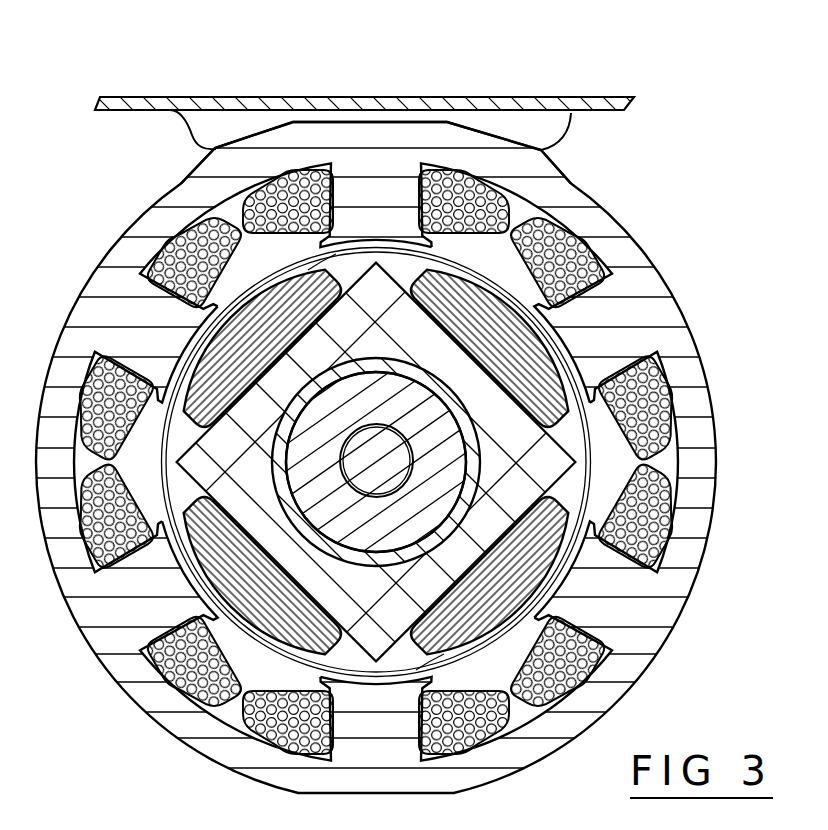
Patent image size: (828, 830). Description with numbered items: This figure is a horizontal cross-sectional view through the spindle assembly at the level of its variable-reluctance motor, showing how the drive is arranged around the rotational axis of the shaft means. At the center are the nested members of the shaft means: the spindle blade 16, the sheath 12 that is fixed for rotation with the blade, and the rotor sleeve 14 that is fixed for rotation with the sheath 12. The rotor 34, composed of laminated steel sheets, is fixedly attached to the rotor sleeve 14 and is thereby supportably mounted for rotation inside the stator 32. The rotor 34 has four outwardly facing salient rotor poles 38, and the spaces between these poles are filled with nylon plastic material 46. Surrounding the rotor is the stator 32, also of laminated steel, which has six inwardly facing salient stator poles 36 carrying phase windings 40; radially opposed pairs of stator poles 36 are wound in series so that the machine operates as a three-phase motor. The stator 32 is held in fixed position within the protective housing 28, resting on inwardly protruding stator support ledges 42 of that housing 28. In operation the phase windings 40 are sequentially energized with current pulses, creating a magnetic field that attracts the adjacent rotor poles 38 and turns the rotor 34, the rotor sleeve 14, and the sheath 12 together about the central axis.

The sheath 12 is at (444, 448).
The rotor sleeve 14 is at (352, 552).
The spindle blade 16 is at (371, 425).
The protective housing 28 is at (212, 100).
The stator 32 is at (664, 310).
The rotor 34 is at (225, 472).
The salient stator poles 36 is at (588, 393).
The salient rotor poles 38 is at (440, 257).
The phase windings 40 is at (173, 263).
The stator support ledges 42 is at (546, 125).
The nylon plastic material 46 is at (546, 325).